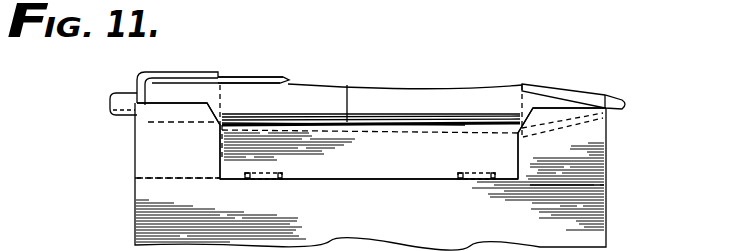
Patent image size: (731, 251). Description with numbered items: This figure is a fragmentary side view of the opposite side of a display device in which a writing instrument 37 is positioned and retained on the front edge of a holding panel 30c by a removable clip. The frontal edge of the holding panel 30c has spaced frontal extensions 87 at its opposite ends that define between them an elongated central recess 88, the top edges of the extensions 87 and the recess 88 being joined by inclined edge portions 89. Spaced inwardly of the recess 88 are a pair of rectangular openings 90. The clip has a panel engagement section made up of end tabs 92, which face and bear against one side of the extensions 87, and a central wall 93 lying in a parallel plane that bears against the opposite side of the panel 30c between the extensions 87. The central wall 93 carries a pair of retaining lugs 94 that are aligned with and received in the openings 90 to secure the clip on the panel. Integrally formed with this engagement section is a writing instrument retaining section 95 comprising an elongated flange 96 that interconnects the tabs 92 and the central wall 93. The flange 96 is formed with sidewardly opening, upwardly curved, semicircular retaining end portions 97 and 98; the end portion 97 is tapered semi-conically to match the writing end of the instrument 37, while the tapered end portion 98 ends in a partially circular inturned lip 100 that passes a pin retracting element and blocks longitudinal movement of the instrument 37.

The holding panel 30c is at (614, 202).
The writing instrument 37 is at (413, 92).
The frontal extensions 87 is at (162, 103).
The central recess 88 is at (315, 130).
The inclined edge portions 89 is at (214, 115).
The rectangular openings 90 is at (250, 178).
The end tabs 92 is at (147, 180).
The central wall 93 is at (368, 175).
The retaining lugs 94 is at (268, 179).
The writing instrument retaining section 95 is at (463, 125).
The flange 96 is at (400, 133).
The retaining end portion 97 is at (578, 92).
The retaining end portion 98 is at (176, 70).
The inturned lip 100 is at (137, 86).